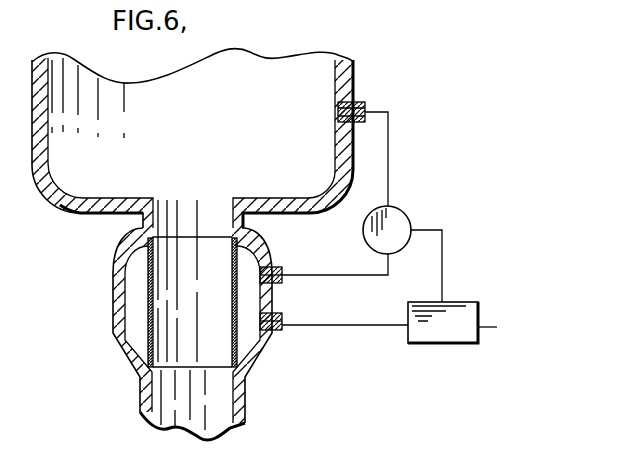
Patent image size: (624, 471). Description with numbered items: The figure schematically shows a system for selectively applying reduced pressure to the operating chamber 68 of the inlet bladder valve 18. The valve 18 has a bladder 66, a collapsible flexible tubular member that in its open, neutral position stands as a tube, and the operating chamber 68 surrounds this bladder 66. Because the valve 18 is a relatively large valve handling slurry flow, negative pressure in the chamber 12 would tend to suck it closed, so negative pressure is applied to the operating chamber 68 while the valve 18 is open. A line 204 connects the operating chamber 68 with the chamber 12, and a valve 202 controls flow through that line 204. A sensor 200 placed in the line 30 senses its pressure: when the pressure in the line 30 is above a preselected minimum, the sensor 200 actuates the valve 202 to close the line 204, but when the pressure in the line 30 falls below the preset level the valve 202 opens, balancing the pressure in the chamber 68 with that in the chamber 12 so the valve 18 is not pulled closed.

The chamber 12 is at (352, 100).
The inlet bladder valve 18 is at (271, 258).
The line 30 is at (508, 318).
The bladder 66 is at (270, 352).
The operating chamber 68 is at (138, 322).
The sensor 200 is at (423, 344).
The valve 202 is at (407, 212).
The line 204 is at (389, 151).